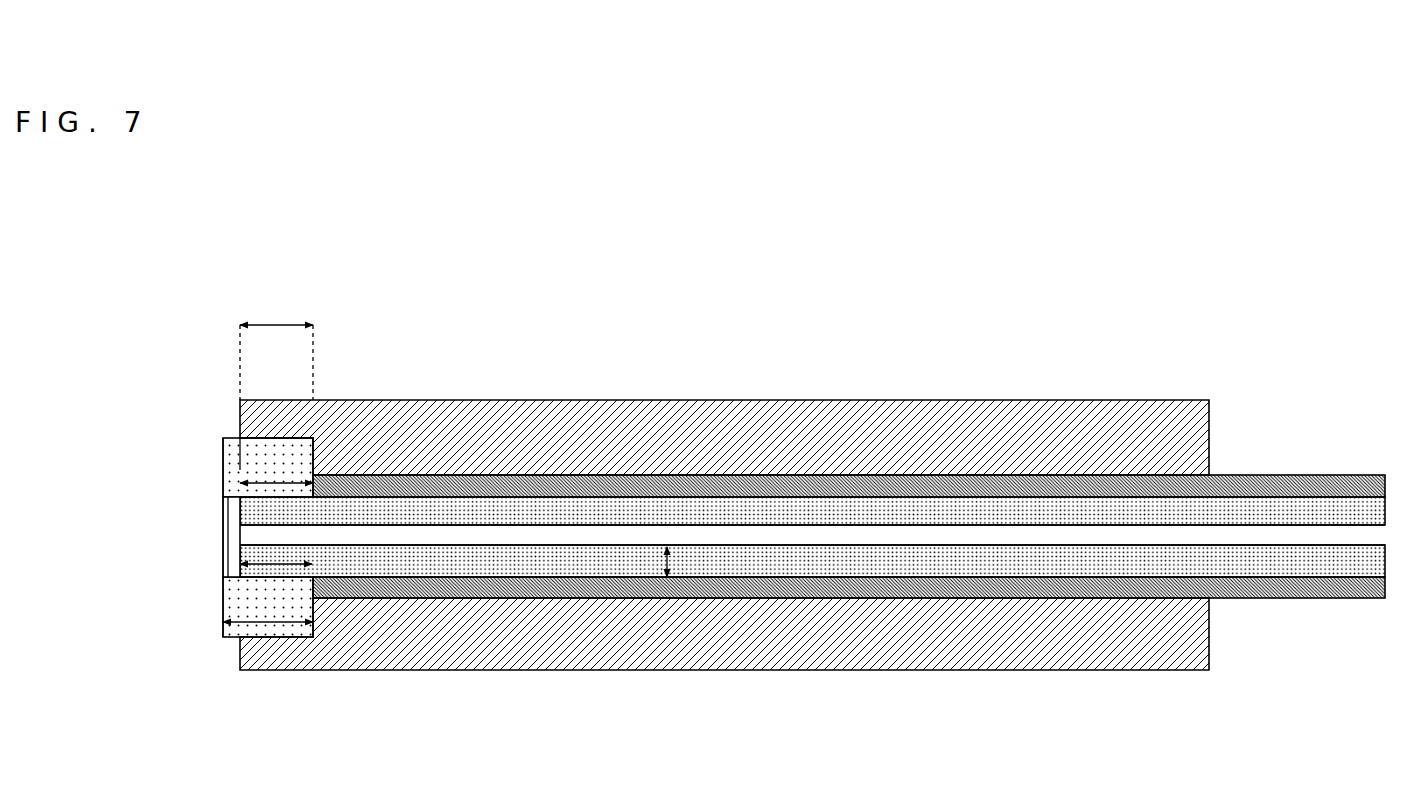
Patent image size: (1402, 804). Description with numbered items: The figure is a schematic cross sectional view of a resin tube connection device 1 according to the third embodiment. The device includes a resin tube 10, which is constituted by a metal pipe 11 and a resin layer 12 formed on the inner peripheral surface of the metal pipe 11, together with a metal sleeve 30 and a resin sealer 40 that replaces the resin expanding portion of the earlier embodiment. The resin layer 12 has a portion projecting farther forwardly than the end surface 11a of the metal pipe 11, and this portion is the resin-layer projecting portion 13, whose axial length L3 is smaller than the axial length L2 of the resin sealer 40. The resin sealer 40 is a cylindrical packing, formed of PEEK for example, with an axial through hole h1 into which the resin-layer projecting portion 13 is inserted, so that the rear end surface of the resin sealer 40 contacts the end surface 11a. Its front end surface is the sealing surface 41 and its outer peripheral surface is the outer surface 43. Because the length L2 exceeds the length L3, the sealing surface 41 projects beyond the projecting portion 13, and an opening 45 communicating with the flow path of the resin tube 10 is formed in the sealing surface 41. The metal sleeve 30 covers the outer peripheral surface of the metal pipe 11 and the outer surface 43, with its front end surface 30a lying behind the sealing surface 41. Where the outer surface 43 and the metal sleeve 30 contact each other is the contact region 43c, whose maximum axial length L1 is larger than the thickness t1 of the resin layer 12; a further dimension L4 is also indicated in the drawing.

The resin tube connection device 1 is at (1251, 296).
The resin tube 10 is at (812, 474).
The metal pipe 11 is at (1275, 487).
The resin layer 12 is at (1318, 510).
The resin-layer projecting portion 13 is at (288, 513).
The end surface 11a is at (313, 590).
The metal sleeve 30 is at (636, 411).
The end surface 30a is at (236, 437).
The resin sealer 40 is at (192, 486).
The sealing surface 41 is at (223, 447).
The outer surface 43 is at (230, 437).
The contact region 43c is at (255, 437).
The opening 45 is at (228, 562).
The maximum length of the contact region L1 is at (276, 345).
The length of the resin sealer L2 is at (238, 628).
The length of the resin-layer projecting portion L3 is at (255, 564).
The length L4 is at (283, 483).
The through hole h1 is at (233, 500).
The thickness of the resin layer t1 is at (667, 560).